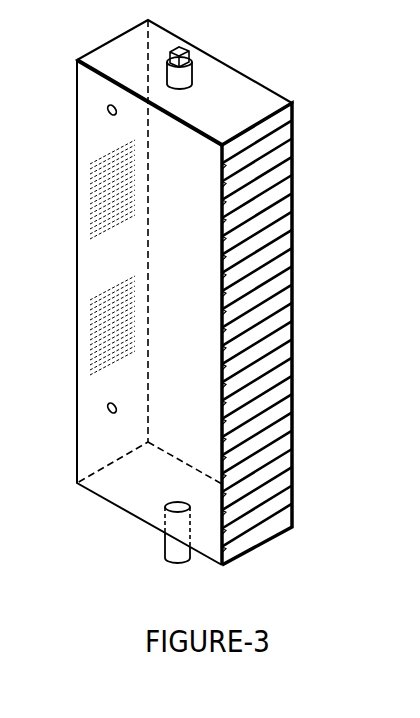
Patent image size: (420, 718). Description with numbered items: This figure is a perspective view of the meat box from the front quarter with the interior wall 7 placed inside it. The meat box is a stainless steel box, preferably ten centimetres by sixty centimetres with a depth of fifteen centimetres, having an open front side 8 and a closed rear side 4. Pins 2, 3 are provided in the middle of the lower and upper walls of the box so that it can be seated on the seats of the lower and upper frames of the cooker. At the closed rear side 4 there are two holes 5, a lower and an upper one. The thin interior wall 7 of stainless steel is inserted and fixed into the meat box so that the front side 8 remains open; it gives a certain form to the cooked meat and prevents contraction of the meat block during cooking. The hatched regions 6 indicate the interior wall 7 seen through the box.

The pin 2 is at (172, 551).
The pin 3 is at (185, 73).
The closed rear side 4 is at (120, 260).
The holes 5 is at (108, 113).
The screened openings 6 is at (120, 202).
The interior wall 7 is at (242, 172).
The open front side 8 is at (277, 358).